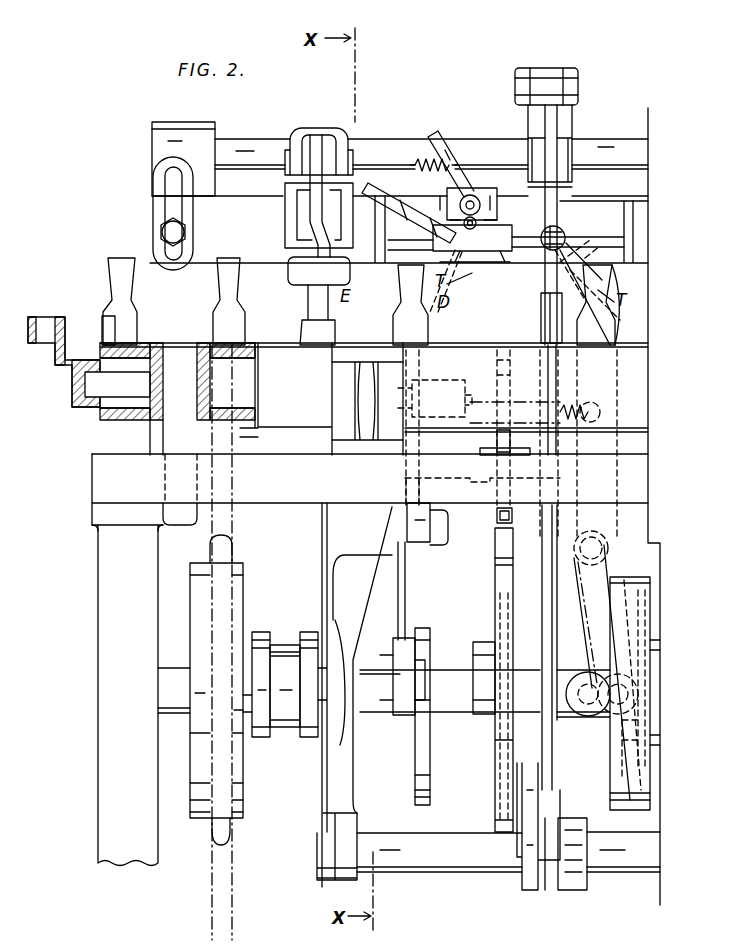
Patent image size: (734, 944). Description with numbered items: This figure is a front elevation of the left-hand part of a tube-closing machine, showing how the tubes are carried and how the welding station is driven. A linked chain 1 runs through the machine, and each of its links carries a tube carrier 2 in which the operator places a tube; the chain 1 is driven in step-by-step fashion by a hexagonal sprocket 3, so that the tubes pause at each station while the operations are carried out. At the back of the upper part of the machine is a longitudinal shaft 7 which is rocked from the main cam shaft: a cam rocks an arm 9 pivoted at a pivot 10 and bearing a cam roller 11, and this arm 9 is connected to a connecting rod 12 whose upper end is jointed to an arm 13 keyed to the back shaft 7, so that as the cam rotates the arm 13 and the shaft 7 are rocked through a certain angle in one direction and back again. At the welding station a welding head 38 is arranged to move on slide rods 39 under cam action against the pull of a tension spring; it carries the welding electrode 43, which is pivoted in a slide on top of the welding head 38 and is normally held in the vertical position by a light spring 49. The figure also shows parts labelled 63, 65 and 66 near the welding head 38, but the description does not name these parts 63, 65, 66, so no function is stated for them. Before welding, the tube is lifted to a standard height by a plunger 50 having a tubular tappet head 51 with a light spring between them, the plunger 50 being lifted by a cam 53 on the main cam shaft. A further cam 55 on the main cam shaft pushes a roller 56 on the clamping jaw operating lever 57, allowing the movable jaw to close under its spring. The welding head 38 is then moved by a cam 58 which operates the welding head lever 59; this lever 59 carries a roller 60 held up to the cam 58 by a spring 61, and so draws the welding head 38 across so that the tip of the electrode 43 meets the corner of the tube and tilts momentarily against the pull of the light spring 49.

The linked chain 1 is at (78, 407).
The tube carrier 2 is at (32, 318).
The hexagonal sprocket 3 is at (104, 424).
The longitudinal shaft 7 is at (584, 152).
The arm 9 is at (528, 840).
The pivot 10 is at (632, 862).
The cam roller 11 is at (513, 770).
The connecting rod 12 is at (562, 188).
The arm 13 is at (527, 118).
The welding head 38 is at (492, 237).
The slide rods 39 is at (578, 236).
The welding electrode 43 is at (405, 262).
The light spring 49 is at (424, 164).
The plunger 50 is at (498, 432).
The tubular tappet head 51 is at (515, 427).
The cam 53 is at (495, 584).
The cam 55 is at (415, 794).
The roller 56 is at (430, 716).
The clamping jaw operating lever 57 is at (468, 376).
The cam 58 is at (626, 760).
The welding head lever 59 is at (575, 256).
The roller 60 is at (595, 714).
The spring 61 is at (568, 409).
The pivot pin 63 is at (477, 204).
The lever 65 is at (443, 148).
The lever 66 is at (362, 200).